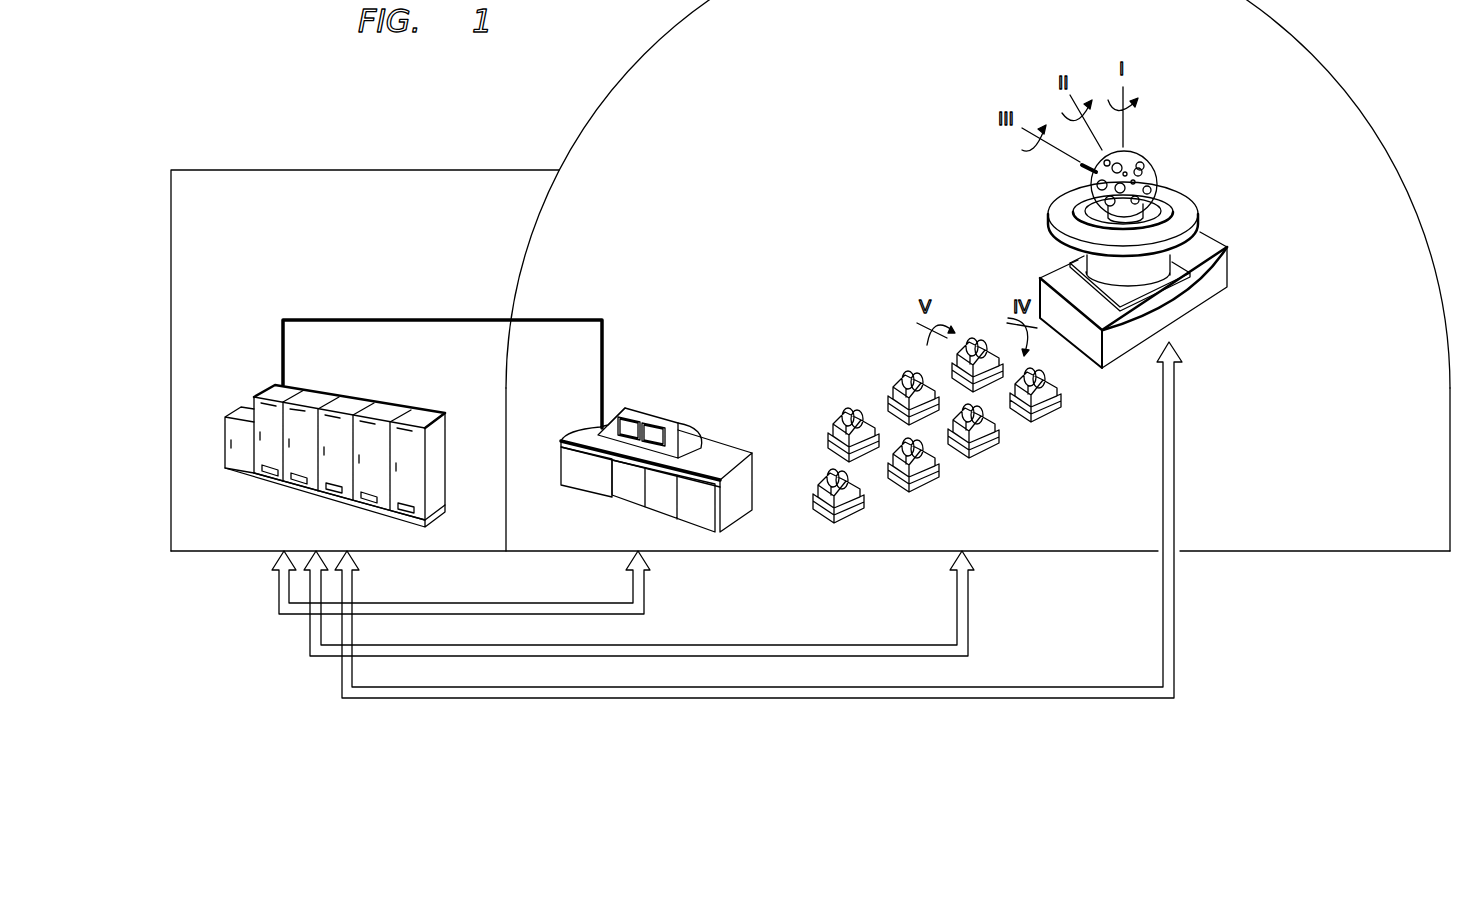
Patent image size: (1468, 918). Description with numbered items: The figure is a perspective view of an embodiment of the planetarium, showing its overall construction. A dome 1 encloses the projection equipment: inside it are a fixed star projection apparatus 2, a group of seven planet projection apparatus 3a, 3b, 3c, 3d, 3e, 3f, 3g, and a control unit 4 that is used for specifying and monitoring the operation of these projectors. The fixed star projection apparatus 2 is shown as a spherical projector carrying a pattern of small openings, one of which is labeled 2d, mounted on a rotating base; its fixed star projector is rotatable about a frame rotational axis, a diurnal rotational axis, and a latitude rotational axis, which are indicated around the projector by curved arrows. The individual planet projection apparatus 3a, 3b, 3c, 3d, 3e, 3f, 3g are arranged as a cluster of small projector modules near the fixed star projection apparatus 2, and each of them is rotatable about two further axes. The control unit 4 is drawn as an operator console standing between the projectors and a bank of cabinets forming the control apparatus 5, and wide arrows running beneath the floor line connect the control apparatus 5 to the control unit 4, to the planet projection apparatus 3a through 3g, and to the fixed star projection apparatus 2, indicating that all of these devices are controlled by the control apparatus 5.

The dome 1 is at (1358, 92).
The fixed star projection apparatus 2 is at (1152, 147).
The hole in workpiece 2d is at (1142, 163).
The planet projection apparatus 3a is at (980, 337).
The planet projection apparatus 3b is at (1042, 422).
The planet projection apparatus 3c is at (980, 458).
The planet projection apparatus 3d is at (890, 400).
The planet projection apparatus 3e is at (831, 440).
The planet projection apparatus 3f is at (920, 492).
The planet projection apparatus 3g is at (846, 522).
The control unit 4 is at (688, 433).
The control apparatus 5 is at (239, 368).